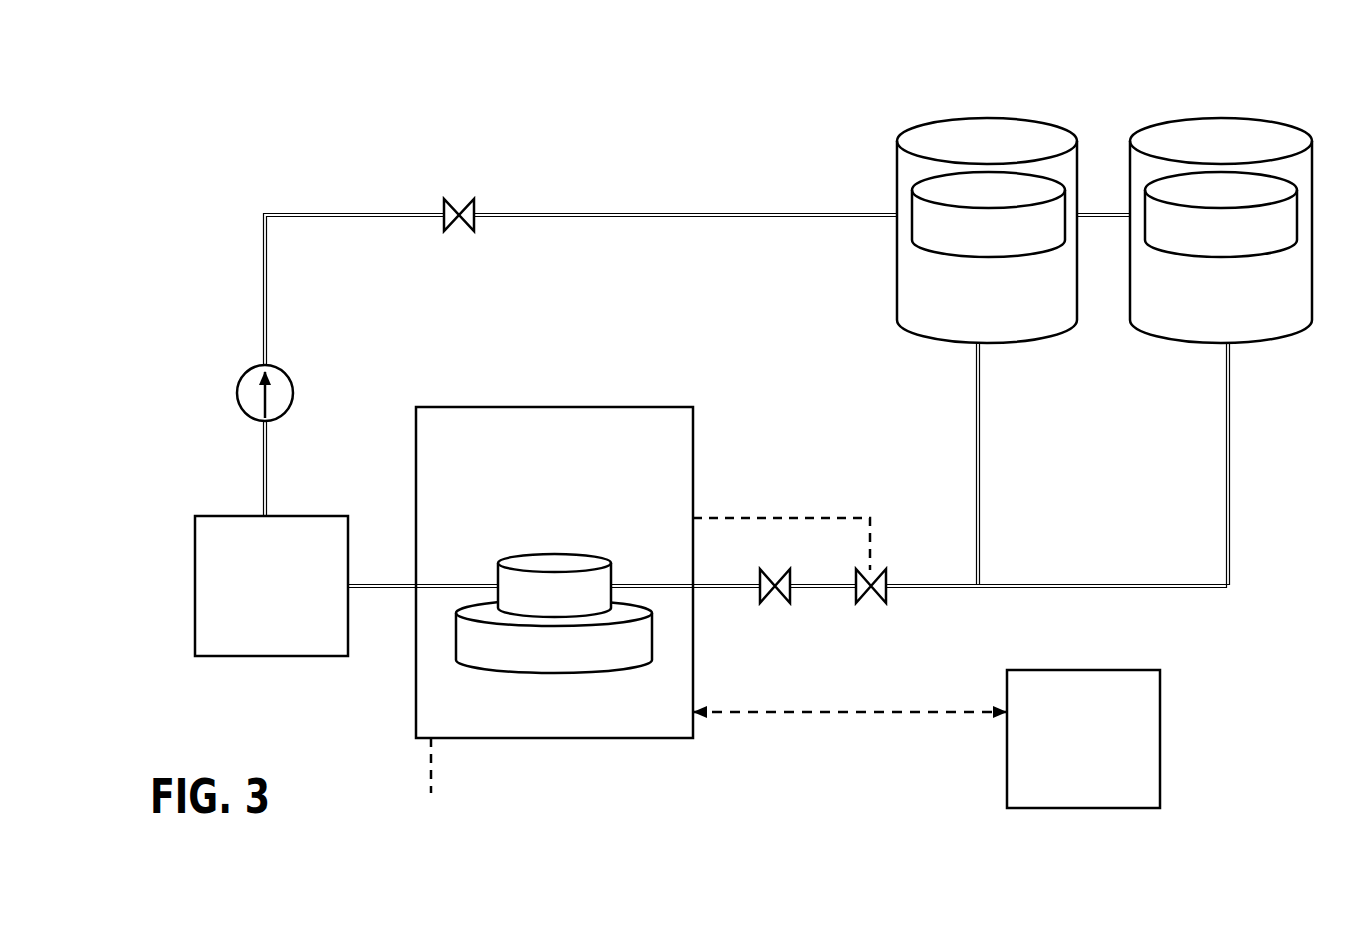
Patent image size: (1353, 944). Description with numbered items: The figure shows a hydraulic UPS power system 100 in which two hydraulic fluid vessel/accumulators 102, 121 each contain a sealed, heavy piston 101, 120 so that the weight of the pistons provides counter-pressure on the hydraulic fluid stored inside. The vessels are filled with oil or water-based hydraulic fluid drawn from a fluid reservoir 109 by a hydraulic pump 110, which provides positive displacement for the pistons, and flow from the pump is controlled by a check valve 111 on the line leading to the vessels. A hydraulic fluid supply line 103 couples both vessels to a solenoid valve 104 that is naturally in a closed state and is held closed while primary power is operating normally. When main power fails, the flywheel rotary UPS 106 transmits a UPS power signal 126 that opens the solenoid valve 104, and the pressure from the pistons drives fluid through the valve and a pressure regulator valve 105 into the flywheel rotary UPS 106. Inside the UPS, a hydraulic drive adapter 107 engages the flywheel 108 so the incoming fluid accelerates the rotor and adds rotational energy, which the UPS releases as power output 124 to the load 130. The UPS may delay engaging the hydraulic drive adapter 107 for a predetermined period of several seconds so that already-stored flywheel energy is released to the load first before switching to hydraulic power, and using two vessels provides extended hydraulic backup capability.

The UPS power system 100 is at (195, 145).
The piston 101 is at (905, 199).
The vessel/accumulator 102 is at (987, 231).
The hydraulic fluid supply line 103 is at (747, 401).
The solenoid valve 104 is at (903, 622).
The pressure regulator valve 105 is at (774, 629).
The flywheel rotary UPS 106 is at (554, 572).
The hydraulic drive adapter 107 is at (611, 558).
The flywheel 108 is at (540, 669).
The fluid reservoir 109 is at (271, 586).
The hydraulic pump 110 is at (221, 390).
The check valve 111 is at (465, 258).
The piston 120 is at (1142, 186).
The vessel/accumulator 121 is at (1221, 231).
The power output 124 is at (850, 742).
The UPS power signal 126 is at (664, 672).
The load 130 is at (1083, 739).